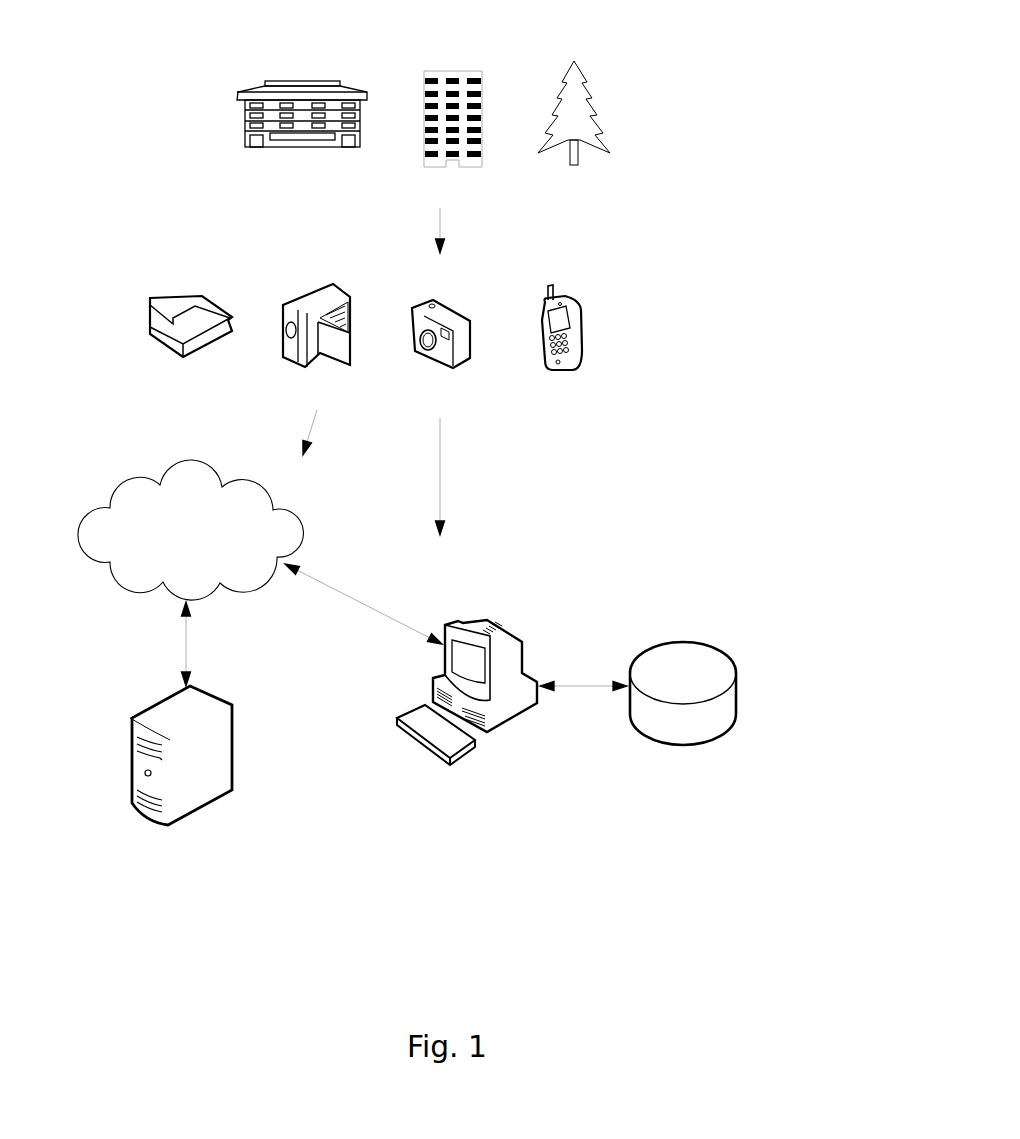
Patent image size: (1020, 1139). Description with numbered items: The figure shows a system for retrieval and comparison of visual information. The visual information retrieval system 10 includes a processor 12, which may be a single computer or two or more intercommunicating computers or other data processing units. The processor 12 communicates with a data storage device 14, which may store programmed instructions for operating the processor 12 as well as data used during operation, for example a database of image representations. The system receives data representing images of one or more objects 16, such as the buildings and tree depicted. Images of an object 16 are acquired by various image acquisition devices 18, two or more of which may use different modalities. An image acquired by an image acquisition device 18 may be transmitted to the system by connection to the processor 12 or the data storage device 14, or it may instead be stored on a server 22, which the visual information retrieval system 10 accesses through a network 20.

The visual information retrieval system 10 is at (691, 527).
The processor 12 is at (507, 630).
The data storage device 14 is at (732, 660).
The object 16 is at (615, 78).
The image acquisition device 18 is at (650, 298).
The network 20 is at (133, 480).
The server 22 is at (133, 718).